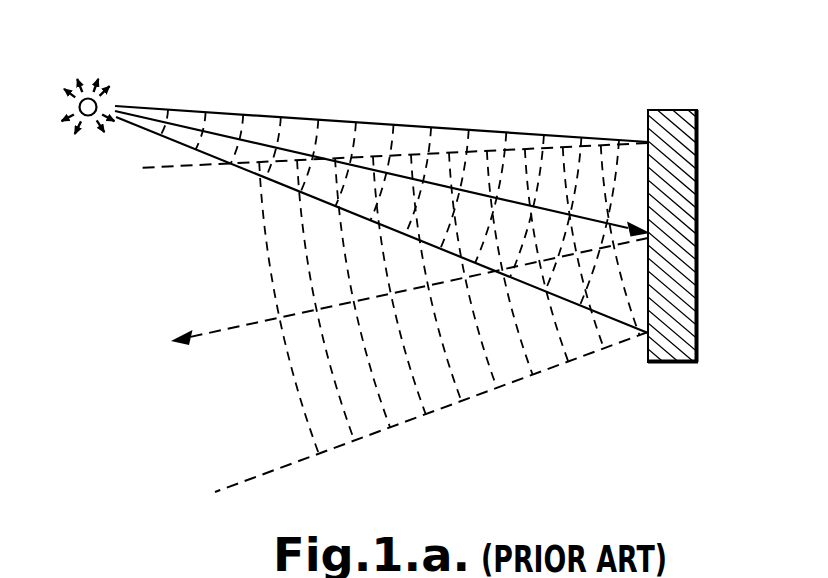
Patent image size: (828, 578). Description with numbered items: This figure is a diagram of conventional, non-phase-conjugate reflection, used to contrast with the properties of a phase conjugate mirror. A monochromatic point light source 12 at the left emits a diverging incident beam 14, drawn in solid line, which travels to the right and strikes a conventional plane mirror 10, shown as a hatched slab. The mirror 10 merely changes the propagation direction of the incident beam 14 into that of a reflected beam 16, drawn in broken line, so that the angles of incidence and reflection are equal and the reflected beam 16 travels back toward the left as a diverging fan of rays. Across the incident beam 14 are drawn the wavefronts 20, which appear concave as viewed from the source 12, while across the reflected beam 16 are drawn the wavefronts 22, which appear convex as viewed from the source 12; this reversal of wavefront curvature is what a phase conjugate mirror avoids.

The plane mirror 10 is at (680, 110).
The point light source 12 is at (89, 66).
The incident beam 14 is at (478, 190).
The reflected beam 16 is at (213, 326).
The wavefronts 20 is at (356, 127).
The wavefronts 22 is at (288, 370).